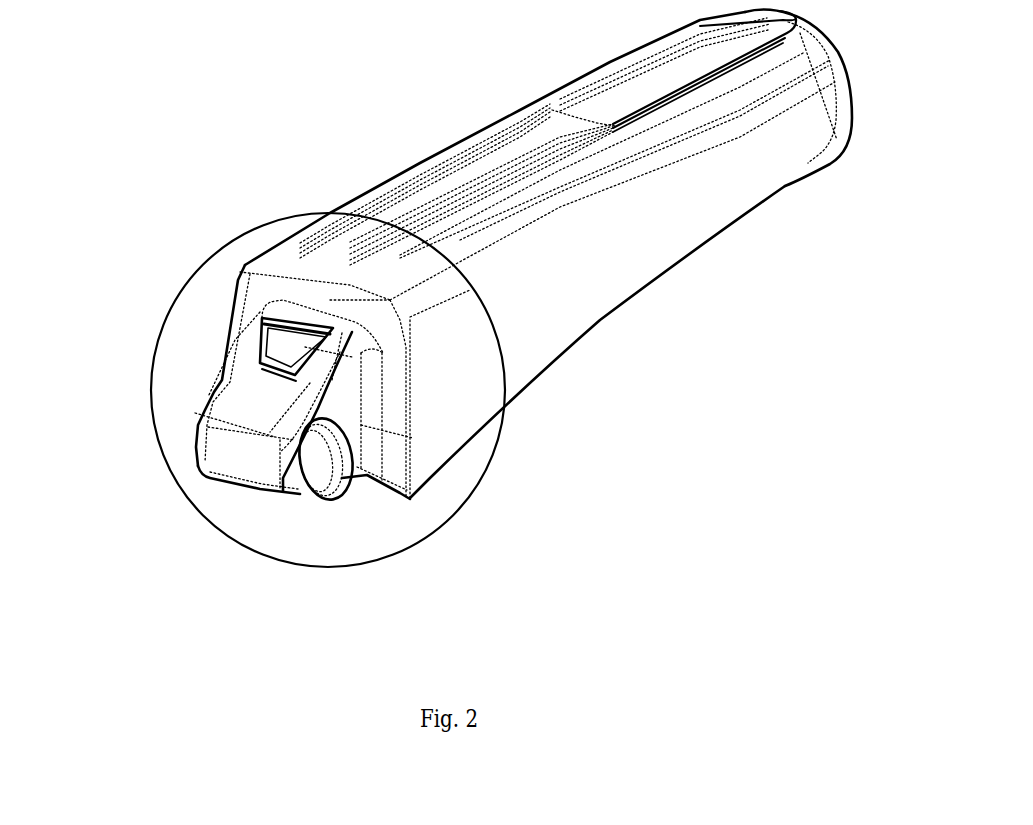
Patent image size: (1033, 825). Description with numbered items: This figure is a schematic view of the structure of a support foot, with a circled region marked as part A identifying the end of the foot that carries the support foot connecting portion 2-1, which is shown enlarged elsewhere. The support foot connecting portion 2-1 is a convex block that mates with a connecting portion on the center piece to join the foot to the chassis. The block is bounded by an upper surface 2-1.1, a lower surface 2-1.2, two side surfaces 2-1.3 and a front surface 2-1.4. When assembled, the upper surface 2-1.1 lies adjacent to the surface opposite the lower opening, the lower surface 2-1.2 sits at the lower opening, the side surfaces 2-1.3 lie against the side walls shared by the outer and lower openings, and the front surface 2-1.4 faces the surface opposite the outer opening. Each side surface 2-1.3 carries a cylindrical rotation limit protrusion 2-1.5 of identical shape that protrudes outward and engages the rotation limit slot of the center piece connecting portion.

The support foot connecting portion 2-1 is at (219, 257).
The upper surface 2-1.1 is at (245, 387).
The lower surface 2-1.2 is at (320, 507).
The side surface 2-1.3 is at (350, 417).
The front surface 2-1.4 is at (230, 460).
The rotation limit protrusion 2-1.5 is at (332, 467).
The part A is at (270, 228).